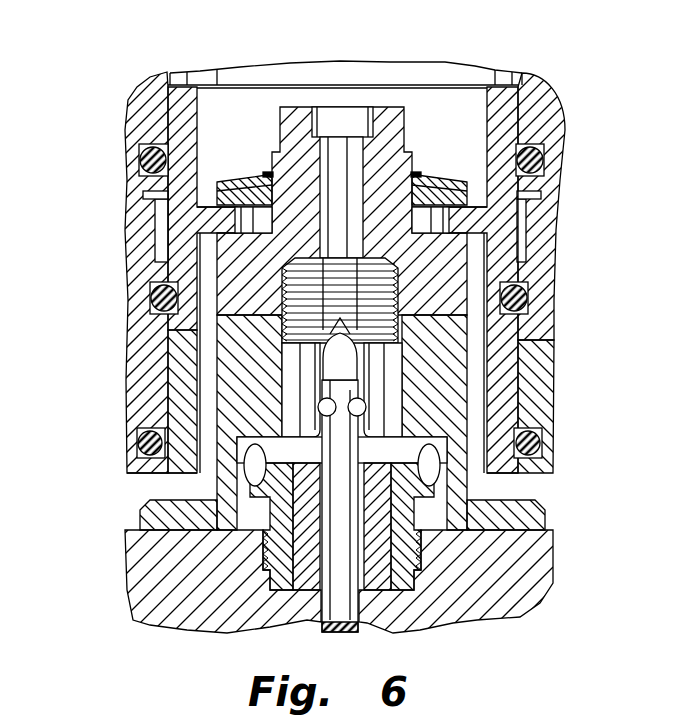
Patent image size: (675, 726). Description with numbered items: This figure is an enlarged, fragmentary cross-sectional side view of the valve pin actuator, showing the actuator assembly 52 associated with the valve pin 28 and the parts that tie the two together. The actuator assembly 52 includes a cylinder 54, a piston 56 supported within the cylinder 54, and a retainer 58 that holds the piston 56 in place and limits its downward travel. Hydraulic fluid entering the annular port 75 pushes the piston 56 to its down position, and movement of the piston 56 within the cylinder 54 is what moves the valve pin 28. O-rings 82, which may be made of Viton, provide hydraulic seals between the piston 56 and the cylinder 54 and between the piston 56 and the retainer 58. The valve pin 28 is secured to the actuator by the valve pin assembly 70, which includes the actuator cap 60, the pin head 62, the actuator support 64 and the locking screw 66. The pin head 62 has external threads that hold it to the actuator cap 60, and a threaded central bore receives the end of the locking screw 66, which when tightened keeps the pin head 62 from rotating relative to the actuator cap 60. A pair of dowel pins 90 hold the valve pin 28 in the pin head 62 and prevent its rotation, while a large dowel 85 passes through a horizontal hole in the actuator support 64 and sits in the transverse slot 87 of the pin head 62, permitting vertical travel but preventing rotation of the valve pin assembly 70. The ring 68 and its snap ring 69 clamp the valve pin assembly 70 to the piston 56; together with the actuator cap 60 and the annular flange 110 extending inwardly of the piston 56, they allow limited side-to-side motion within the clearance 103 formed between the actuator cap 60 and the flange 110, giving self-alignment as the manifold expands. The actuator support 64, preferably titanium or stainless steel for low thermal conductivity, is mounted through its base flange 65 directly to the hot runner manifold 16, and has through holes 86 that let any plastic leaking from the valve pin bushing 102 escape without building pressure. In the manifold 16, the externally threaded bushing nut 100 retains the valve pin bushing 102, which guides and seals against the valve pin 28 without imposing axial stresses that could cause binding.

The hot runner manifold 16 is at (553, 590).
The valve pin 28 is at (353, 628).
The actuator assembly 52 is at (425, 218).
The cylinder 54 is at (540, 277).
The piston 56 is at (175, 385).
The retainer 58 is at (527, 400).
The actuator cap 60 is at (404, 118).
The pin head 62 is at (398, 330).
The actuator support 64 is at (455, 490).
The base flange 65 is at (540, 520).
The locking screw 66 is at (345, 118).
The ring 68 is at (230, 180).
The snap ring 69 is at (273, 153).
The valve pin assembly 70 is at (170, 489).
The annular port 75 is at (520, 218).
The O-rings 82 is at (528, 300).
The dowel 85 is at (303, 408).
The through holes 86 is at (145, 452).
The transverse slot 87 is at (290, 353).
The dowel pins 90 is at (318, 407).
The bushing nut 100 is at (270, 558).
The valve pin bushing 102 is at (262, 618).
The clearance 103 is at (445, 215).
The annular flange 110 is at (220, 221).